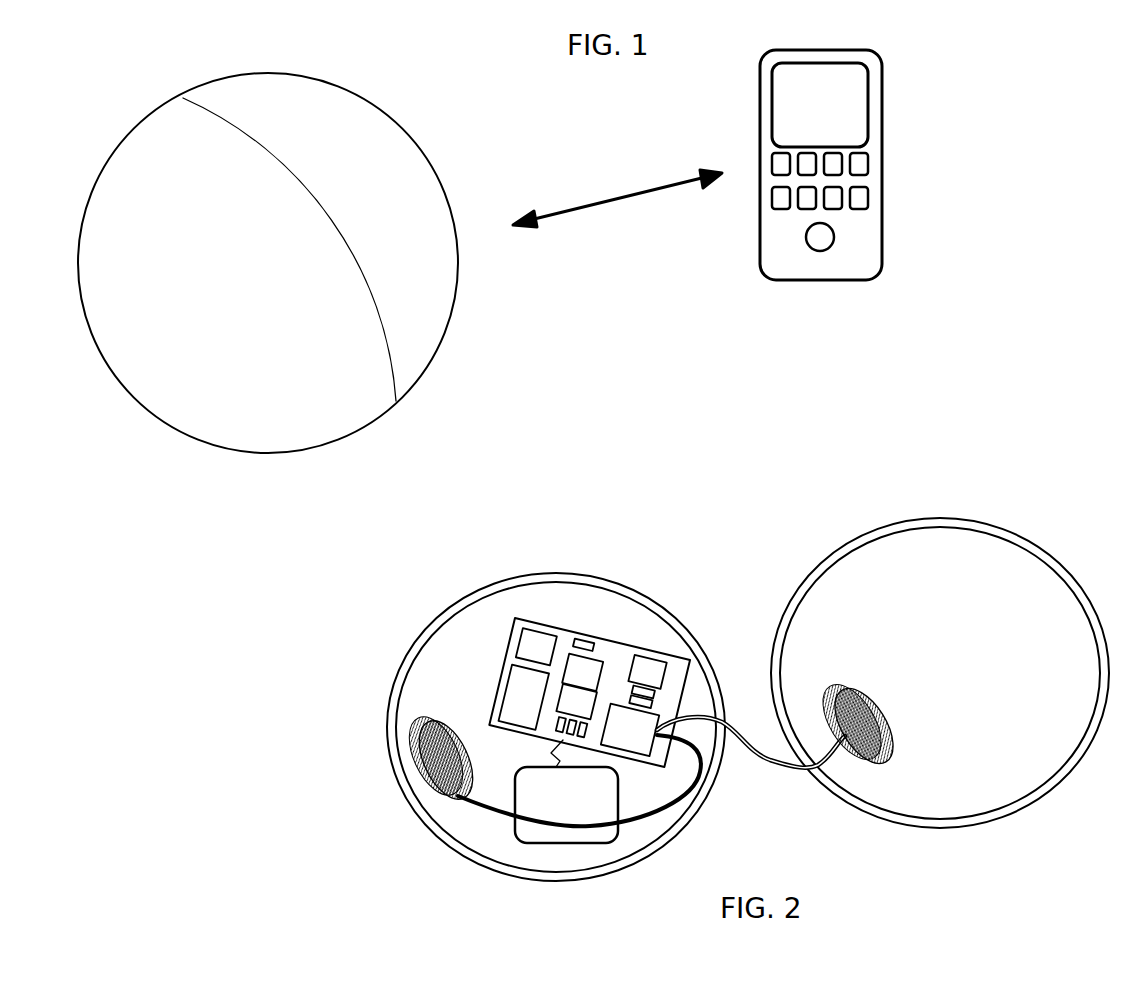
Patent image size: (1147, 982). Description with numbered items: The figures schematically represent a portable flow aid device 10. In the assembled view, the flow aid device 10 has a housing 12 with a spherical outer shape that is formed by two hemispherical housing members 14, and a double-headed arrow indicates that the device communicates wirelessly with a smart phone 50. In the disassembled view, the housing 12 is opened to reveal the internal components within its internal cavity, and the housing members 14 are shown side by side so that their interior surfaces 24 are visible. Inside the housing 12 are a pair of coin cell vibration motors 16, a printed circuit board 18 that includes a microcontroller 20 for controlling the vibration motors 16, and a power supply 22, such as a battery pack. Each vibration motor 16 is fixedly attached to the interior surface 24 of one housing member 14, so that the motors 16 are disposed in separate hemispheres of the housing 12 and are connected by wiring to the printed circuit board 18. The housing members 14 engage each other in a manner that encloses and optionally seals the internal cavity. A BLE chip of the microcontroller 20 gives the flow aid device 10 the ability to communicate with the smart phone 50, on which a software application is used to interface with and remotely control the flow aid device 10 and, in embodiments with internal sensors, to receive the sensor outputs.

In FIG. 1, the portable flow aid device 10 is at (307, 304).
In FIG. 2, the portable flow aid device 10 is at (681, 676).
In FIG. 1, the housing 12 is at (335, 100).
In FIG. 1, the hemispherical housing members 14 is at (434, 219).
In FIG. 2, the hemispherical housing members 14 is at (407, 650).
In FIG. 2, the coin cell vibration motors 16 is at (432, 777).
In FIG. 2, the printed circuit board 18 is at (517, 630).
In FIG. 2, the microcontroller 20 is at (513, 690).
In FIG. 2, the power supply 22 is at (562, 833).
In FIG. 2, the interior surface 24 is at (403, 713).
In FIG. 1, the smart phone 50 is at (914, 80).